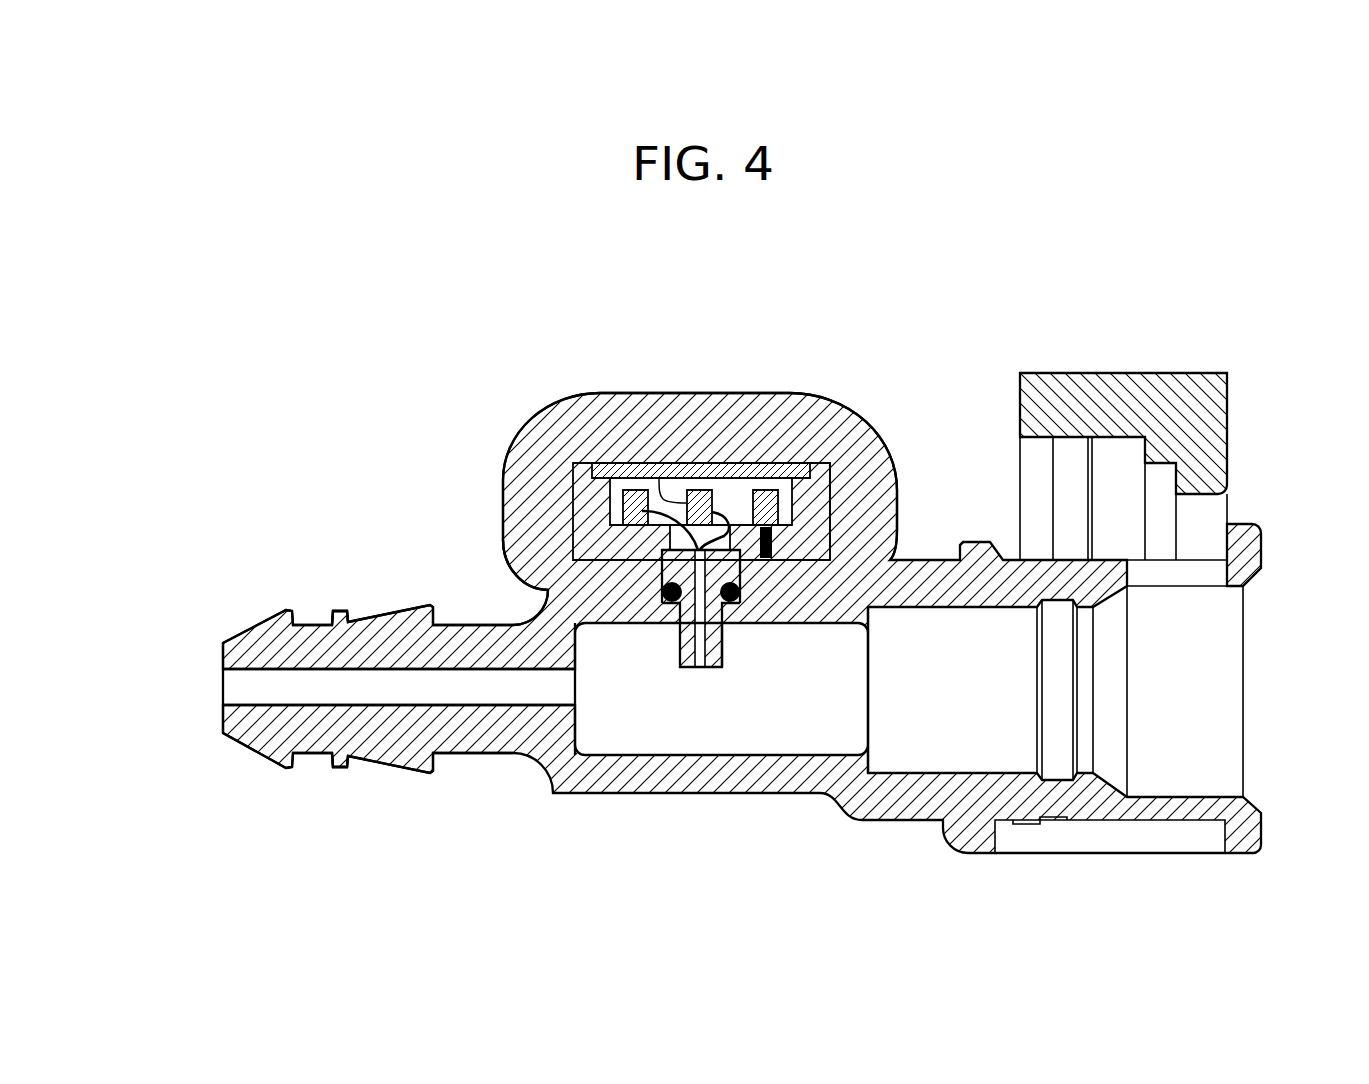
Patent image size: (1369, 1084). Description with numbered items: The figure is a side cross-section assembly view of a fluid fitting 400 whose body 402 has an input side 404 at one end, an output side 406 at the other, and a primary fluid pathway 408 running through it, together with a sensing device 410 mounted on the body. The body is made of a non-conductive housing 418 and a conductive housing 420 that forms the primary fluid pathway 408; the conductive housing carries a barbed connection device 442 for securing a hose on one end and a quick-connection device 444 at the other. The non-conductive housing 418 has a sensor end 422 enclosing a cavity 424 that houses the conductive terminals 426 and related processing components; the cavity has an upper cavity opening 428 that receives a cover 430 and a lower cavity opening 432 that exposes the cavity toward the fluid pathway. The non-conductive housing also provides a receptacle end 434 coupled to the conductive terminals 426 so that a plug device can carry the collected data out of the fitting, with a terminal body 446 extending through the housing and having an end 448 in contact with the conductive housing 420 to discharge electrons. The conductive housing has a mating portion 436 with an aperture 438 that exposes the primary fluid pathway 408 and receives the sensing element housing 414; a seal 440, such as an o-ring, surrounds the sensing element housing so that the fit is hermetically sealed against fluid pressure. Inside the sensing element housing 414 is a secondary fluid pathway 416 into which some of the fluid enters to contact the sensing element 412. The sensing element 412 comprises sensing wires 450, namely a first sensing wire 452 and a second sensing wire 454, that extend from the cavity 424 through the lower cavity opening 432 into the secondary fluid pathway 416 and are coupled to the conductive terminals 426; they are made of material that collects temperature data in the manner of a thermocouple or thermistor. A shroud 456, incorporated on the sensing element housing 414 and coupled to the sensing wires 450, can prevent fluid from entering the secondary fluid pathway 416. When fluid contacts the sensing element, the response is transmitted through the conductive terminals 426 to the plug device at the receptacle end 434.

The fluid fitting 400 is at (1147, 281).
The body 402 is at (112, 392).
The input side 404 is at (1289, 675).
The output side 406 is at (169, 726).
The primary fluid pathway 408 is at (233, 687).
The sensing device 410 is at (620, 575).
The sensing element 412 is at (738, 381).
The sensing element housing 414 is at (705, 701).
The secondary fluid pathway 416 is at (698, 672).
The non-conductive housing 418 is at (870, 425).
The conductive housing 420 is at (697, 793).
The sensor end 422 is at (843, 500).
The cavity 424 is at (618, 492).
The conductive terminals 426 is at (765, 490).
The upper cavity opening 428 is at (613, 462).
The cover 430 is at (570, 443).
The lower cavity opening 432 is at (808, 462).
The receptacle end 434 is at (706, 470).
The mating portion 436 is at (852, 582).
The aperture 438 is at (735, 533).
The seal 440 is at (668, 603).
The barbed connection device 442 is at (338, 770).
The quick-connection device 444 is at (1197, 367).
The terminal body 446 is at (773, 545).
The end 448 is at (830, 562).
The sensing wires 450 is at (690, 413).
The first sensing wire 452 is at (686, 463).
The second sensing wire 454 is at (730, 495).
The shroud 456 is at (723, 653).